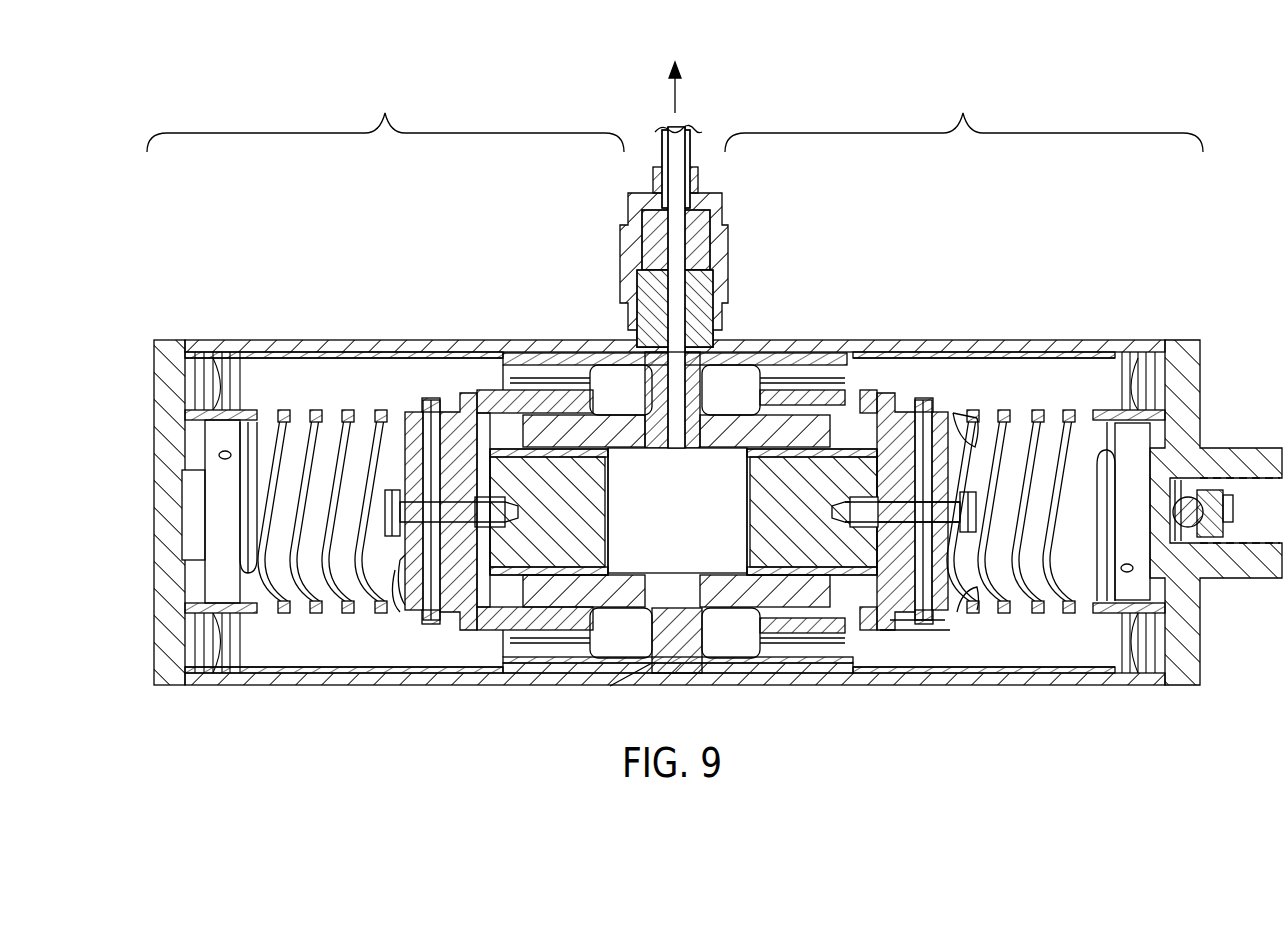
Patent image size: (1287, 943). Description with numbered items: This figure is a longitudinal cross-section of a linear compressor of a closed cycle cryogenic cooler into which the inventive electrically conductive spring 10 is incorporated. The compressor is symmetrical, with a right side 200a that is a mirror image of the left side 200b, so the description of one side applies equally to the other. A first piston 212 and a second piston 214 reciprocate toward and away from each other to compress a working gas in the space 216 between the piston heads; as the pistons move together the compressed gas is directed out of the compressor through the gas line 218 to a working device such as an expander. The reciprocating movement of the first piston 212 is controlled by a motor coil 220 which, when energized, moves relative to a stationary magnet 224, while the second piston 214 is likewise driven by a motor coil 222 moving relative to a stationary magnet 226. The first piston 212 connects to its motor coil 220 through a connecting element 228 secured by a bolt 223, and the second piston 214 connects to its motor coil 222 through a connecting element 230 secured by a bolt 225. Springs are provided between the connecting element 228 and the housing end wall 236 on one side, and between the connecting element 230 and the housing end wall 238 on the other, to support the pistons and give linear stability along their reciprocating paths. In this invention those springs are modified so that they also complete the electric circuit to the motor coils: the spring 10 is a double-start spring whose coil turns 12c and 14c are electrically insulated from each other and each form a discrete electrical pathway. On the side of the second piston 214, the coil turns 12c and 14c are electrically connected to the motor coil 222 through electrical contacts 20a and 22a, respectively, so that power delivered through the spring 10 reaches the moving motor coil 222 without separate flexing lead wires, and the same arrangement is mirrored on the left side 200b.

The extension/compression spring 10 is at (350, 626).
The coil turns of first helical coil 12c is at (1038, 410).
The coil turns of second helical coil 14c is at (1004, 410).
The electrical contact 20a is at (928, 412).
The electrical contact 22a is at (925, 614).
The right side of compressor 200a is at (964, 120).
The left side of compressor 200b is at (385, 120).
The first piston 212 is at (466, 612).
The second piston 214 is at (780, 525).
The space between piston heads 216 is at (676, 537).
The gas line 218 is at (678, 165).
The motor coil 220 is at (538, 398).
The motor coil 222 is at (815, 398).
The bolt 223 is at (395, 500).
The stationary magnet 224 is at (580, 378).
The bolt 225 is at (958, 514).
The stationary magnet 226 is at (768, 378).
The connecting element 228 is at (402, 590).
The connecting element 230 is at (942, 562).
The housing end wall 236 is at (162, 627).
The housing end wall 238 is at (1200, 612).